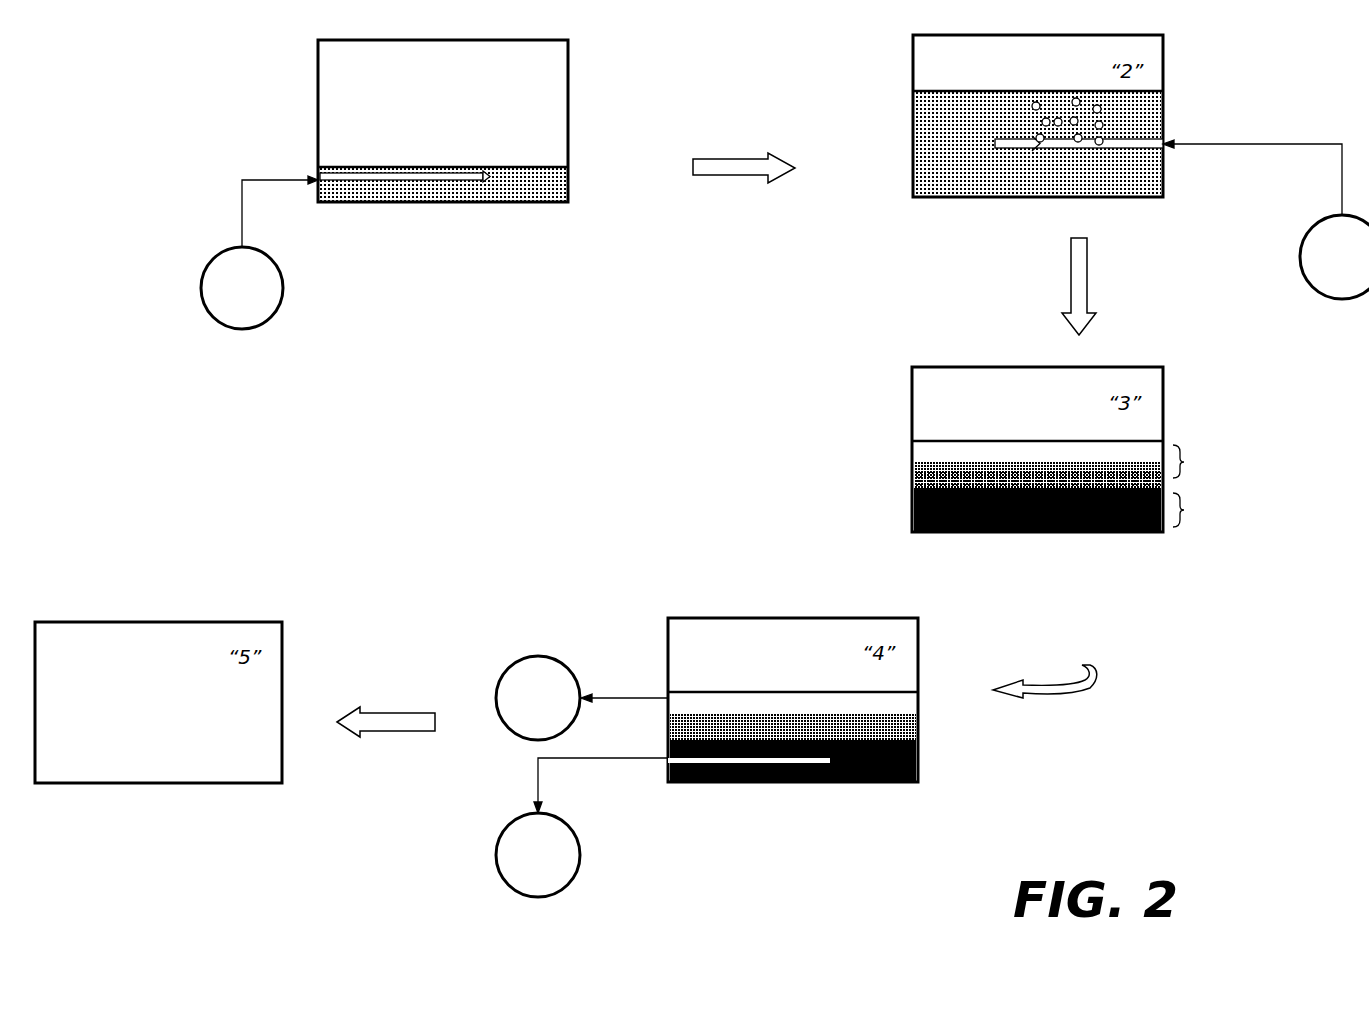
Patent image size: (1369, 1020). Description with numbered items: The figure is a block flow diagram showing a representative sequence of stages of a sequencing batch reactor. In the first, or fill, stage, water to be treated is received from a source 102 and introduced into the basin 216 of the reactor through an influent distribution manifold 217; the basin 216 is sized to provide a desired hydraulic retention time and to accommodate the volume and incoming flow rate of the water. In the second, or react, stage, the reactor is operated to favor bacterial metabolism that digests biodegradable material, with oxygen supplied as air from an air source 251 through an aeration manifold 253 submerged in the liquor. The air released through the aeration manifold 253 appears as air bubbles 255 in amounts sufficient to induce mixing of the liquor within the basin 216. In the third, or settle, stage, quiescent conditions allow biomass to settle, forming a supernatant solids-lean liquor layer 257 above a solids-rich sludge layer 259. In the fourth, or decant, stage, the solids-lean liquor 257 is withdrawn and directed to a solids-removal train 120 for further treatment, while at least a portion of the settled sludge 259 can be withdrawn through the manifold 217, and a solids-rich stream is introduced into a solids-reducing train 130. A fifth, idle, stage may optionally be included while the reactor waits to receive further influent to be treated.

The basin 216 is at (568, 120).
The influent distribution manifold 217 is at (400, 182).
The source 102 is at (213, 322).
The aeration manifold 253 is at (1080, 150).
The air bubbles 255 is at (1105, 110).
The air source 251 is at (1312, 295).
The solids-lean liquor layer 257 is at (1184, 462).
The sludge layer 259 is at (1184, 510).
The solids-removal train 120 is at (510, 668).
The solids-reducing train 130 is at (510, 826).